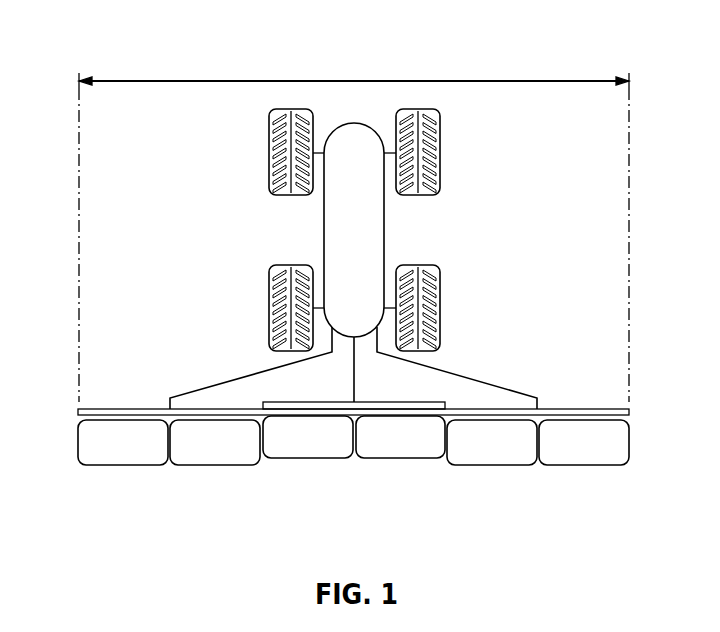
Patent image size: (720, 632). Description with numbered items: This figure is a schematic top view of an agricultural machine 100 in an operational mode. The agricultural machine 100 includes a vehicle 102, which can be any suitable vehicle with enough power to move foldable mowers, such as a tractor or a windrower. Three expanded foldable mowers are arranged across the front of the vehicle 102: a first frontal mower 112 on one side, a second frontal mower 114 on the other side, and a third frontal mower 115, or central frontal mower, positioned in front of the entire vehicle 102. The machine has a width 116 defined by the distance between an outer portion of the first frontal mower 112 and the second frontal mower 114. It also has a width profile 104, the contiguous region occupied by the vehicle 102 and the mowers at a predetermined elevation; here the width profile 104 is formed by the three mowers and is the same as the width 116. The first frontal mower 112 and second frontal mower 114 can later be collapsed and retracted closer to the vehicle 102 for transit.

The agricultural machine 100 is at (118, 52).
The vehicle 102 is at (384, 245).
The width profile 104 is at (297, 80).
The first frontal mower 112 is at (166, 475).
The second frontal mower 114 is at (542, 475).
The third frontal mower 115 is at (353, 475).
The width 116 is at (445, 80).